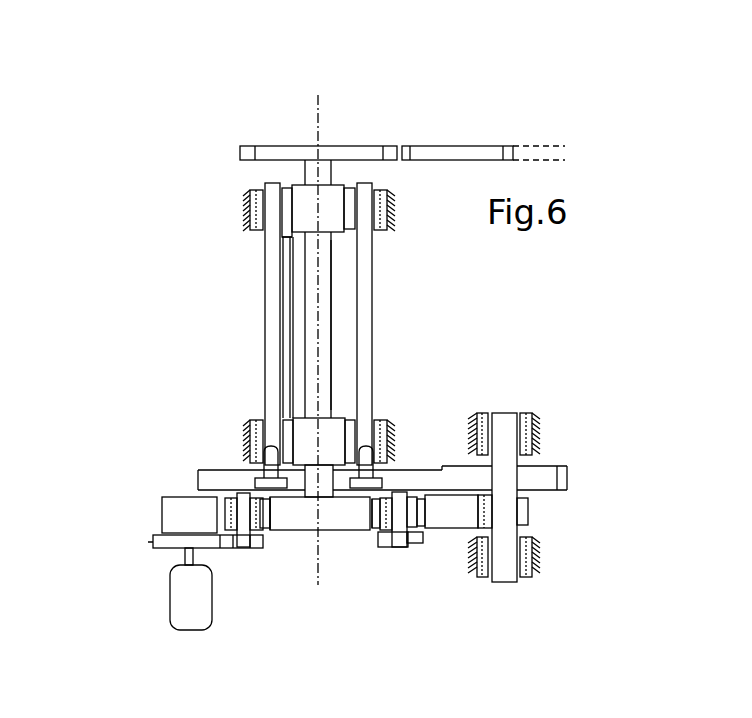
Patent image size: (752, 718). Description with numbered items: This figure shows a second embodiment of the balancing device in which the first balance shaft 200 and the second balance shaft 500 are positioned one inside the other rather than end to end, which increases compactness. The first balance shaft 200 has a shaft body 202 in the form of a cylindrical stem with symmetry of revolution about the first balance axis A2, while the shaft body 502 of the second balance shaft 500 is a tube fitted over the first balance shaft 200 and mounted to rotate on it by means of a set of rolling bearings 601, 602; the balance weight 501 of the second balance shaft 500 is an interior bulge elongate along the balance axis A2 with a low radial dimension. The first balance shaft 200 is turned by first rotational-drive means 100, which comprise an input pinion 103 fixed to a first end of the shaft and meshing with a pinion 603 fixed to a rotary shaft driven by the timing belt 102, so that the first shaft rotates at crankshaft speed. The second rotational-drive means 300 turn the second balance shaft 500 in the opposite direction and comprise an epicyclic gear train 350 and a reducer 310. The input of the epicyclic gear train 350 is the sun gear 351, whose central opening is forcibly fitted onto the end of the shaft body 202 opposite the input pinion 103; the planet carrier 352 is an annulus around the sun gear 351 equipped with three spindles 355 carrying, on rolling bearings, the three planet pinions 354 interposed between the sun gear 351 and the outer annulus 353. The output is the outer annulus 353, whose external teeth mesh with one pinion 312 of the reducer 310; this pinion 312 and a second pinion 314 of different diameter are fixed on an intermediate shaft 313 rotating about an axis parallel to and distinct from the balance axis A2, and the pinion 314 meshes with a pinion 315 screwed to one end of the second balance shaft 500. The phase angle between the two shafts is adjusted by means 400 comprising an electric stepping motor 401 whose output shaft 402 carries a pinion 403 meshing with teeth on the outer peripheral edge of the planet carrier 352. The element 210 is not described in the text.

The first rotational-drive means 100 is at (508, 83).
The timing belt 102 is at (551, 148).
The input pinion 103 is at (380, 145).
The pinion 603 is at (495, 146).
The first balance axis A2 is at (322, 117).
The rolling bearing 601 is at (339, 221).
The rolling bearing 602 is at (340, 454).
The first balance shaft 200 is at (325, 281).
The shaft body 202 is at (331, 320).
The inner element 210 is at (302, 262).
The second balance shaft 500 is at (268, 371).
The balance weight 501 is at (283, 323).
The shaft body 502 is at (265, 295).
The second rotational-drive means 300 is at (578, 323).
The reducer 310 is at (543, 410).
The pinion 312 is at (528, 511).
The intermediate shaft 313 is at (500, 570).
The pinion 314 is at (555, 468).
The pinion 315 is at (200, 480).
The epicyclic gear train 350 is at (452, 410).
The sun gear 351 is at (325, 515).
The planet carrier 352 is at (414, 544).
The outer annulus 353 is at (450, 515).
The planet pinion 354 is at (272, 518).
The spindle 355 is at (407, 480).
The means for adjusting the phase angle 400 is at (170, 598).
The electric stepping motor 401 is at (205, 612).
The output shaft 402 is at (163, 550).
The pinion 403 is at (160, 532).